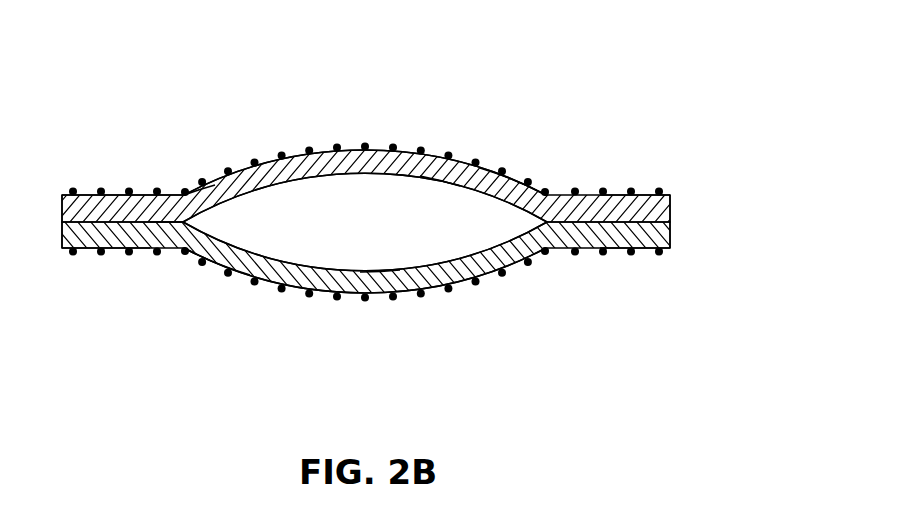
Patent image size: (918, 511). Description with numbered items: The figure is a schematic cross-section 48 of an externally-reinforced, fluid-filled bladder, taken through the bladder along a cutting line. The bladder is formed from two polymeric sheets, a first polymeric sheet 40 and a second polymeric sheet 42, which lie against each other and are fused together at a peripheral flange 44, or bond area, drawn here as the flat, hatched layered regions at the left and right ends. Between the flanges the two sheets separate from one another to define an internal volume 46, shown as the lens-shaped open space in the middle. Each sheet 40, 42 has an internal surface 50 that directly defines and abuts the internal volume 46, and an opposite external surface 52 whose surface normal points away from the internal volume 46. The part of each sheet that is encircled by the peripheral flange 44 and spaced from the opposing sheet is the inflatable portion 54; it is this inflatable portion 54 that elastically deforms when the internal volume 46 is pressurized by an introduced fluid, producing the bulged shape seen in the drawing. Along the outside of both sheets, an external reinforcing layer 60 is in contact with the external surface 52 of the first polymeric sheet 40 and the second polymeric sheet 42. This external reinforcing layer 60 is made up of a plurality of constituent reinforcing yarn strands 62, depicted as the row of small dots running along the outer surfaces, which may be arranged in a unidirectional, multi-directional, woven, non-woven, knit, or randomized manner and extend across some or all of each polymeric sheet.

The first polymeric sheet 40 is at (670, 216).
The second polymeric sheet 42 is at (670, 230).
The peripheral flange 44 is at (110, 275).
The internal volume 46 is at (342, 237).
The cross-section 48 is at (418, 216).
The internal surface 50 is at (452, 180).
The external surface 52 is at (533, 183).
The inflatable portion 54 is at (388, 77).
The external reinforcing layer 60 is at (273, 147).
The reinforcing yarn strands 62 is at (187, 188).